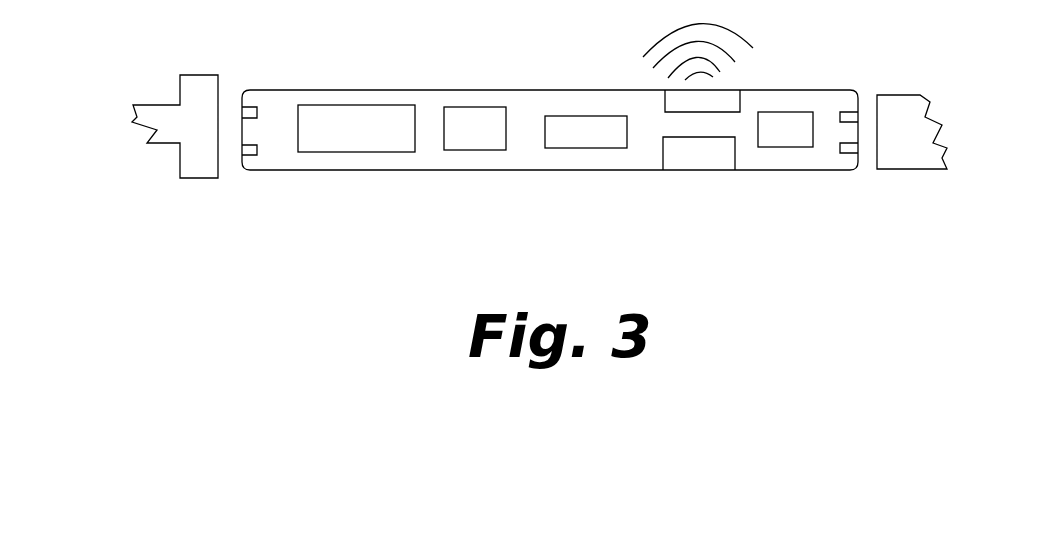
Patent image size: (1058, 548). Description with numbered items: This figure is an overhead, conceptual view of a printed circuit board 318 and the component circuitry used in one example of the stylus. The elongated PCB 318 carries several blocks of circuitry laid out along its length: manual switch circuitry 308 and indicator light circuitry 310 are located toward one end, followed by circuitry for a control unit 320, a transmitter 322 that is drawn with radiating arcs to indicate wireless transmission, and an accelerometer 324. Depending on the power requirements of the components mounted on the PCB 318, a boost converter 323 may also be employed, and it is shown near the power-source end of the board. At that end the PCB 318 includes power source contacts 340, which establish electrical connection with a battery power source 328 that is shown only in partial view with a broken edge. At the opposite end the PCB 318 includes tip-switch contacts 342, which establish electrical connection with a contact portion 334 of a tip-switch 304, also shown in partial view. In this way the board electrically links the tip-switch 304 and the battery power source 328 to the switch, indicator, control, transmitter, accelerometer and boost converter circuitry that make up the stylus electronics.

The tip-switch 304 is at (129, 90).
The contact portion 334 is at (203, 87).
The tip-switch contacts 342 is at (242, 148).
The printed circuit board 318 is at (272, 163).
The manual switch circuitry 308 is at (350, 142).
The indicator light circuitry 310 is at (472, 140).
The control unit 320 is at (577, 127).
The transmitter 322 is at (673, 107).
The accelerometer 324 is at (677, 160).
The boost converter 323 is at (770, 140).
The battery power source 328 is at (907, 105).
The power source contacts 340 is at (850, 148).